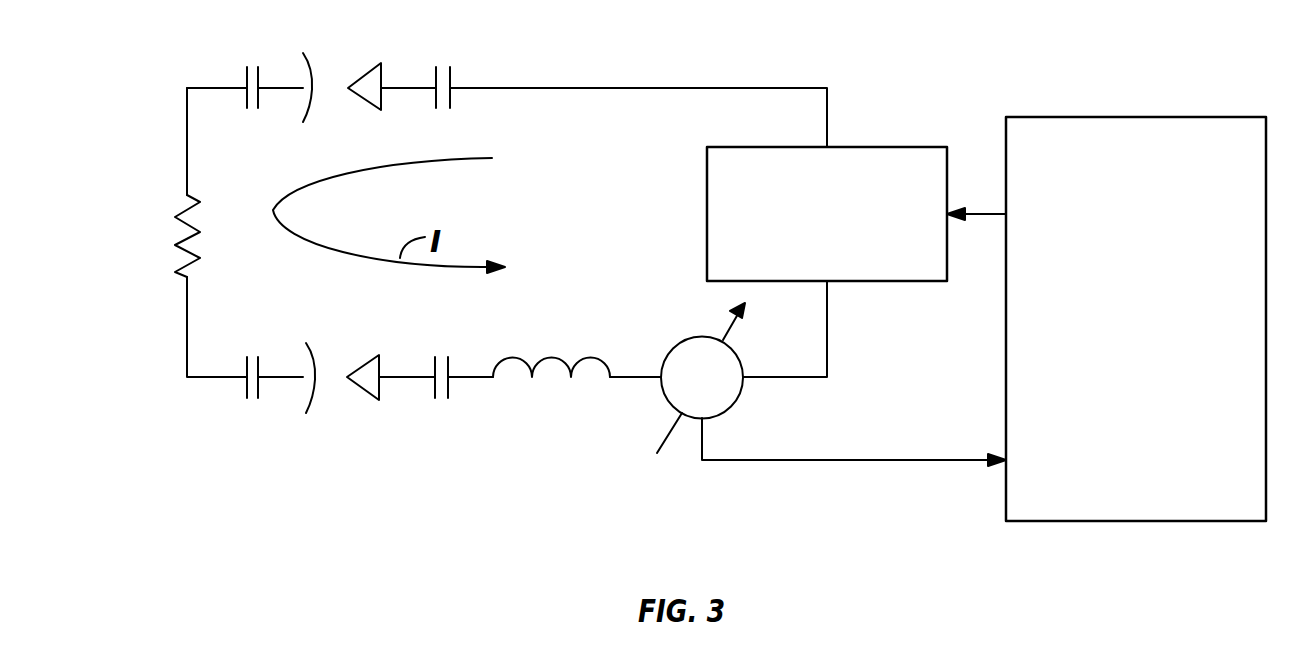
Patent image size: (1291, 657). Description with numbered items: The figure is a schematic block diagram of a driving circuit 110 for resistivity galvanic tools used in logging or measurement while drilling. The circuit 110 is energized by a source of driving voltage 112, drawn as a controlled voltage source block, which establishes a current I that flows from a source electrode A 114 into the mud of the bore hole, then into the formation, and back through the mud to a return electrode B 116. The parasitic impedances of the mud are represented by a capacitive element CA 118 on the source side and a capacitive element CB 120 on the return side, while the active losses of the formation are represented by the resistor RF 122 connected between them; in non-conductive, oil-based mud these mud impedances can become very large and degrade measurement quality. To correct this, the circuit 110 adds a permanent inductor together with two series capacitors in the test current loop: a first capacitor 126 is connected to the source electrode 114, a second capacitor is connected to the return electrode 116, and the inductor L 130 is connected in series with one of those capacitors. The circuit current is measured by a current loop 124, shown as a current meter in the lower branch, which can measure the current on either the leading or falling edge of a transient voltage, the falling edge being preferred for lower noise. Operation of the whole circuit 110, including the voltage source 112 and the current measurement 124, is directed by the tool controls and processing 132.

The driving circuit 110 is at (316, 481).
The source of driving voltage 112 is at (890, 147).
The source electrode A 114 is at (385, 98).
The return electrode B 116 is at (363, 392).
The capacitive element CA 118 is at (243, 80).
The capacitive element CB 120 is at (242, 388).
The active losses RF 122 is at (172, 240).
The current loop 124 is at (702, 334).
The capacitor C1 126 is at (452, 76).
The inductor L 130 is at (592, 360).
The tool controls and processing 132 is at (1113, 196).